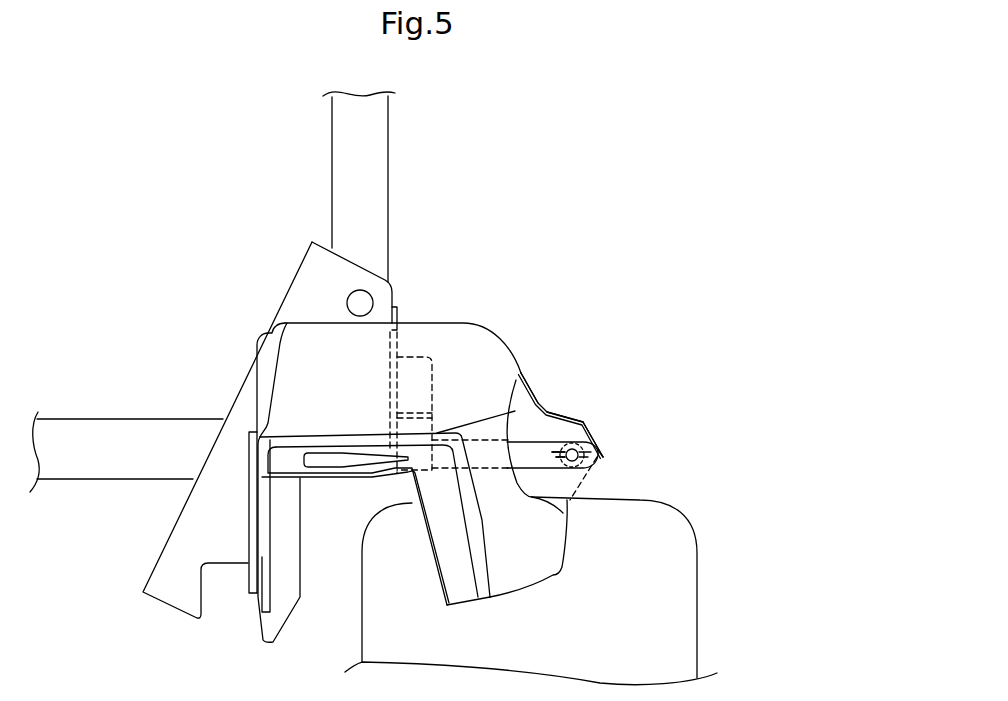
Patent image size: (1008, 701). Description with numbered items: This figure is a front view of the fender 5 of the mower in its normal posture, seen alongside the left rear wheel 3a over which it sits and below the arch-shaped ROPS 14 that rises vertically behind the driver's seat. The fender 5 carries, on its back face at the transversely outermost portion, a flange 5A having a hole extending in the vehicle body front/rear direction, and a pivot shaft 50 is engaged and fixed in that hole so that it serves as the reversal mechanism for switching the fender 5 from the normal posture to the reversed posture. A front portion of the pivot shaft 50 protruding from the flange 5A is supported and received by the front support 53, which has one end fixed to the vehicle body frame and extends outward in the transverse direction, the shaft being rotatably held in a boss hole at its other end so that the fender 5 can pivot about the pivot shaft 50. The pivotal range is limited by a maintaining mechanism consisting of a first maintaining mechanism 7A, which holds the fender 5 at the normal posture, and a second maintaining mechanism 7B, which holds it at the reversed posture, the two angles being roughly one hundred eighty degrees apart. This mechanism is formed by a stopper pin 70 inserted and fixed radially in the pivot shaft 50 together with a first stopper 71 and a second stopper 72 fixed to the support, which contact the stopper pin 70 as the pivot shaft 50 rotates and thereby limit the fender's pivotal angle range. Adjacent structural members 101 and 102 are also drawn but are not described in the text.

The ROPS 14 is at (367, 167).
The fender 5 is at (478, 330).
The bar 102 is at (118, 437).
The bracket 101 is at (295, 447).
The front support 53 is at (532, 455).
The pivot shaft 50 is at (575, 447).
The flange 5A is at (578, 462).
The second maintaining mechanism 7B is at (547, 433).
The first maintaining mechanism 7A is at (605, 432).
The second stopper 72 is at (558, 450).
The first stopper 71 is at (598, 426).
The stopper pin 70 is at (603, 457).
The left rear wheel 3a is at (668, 597).